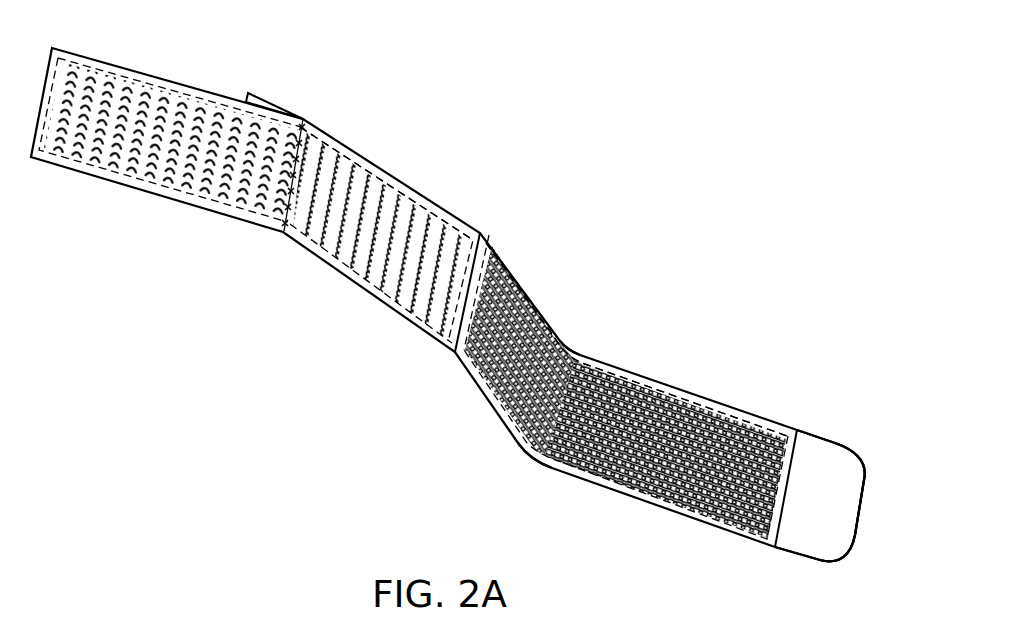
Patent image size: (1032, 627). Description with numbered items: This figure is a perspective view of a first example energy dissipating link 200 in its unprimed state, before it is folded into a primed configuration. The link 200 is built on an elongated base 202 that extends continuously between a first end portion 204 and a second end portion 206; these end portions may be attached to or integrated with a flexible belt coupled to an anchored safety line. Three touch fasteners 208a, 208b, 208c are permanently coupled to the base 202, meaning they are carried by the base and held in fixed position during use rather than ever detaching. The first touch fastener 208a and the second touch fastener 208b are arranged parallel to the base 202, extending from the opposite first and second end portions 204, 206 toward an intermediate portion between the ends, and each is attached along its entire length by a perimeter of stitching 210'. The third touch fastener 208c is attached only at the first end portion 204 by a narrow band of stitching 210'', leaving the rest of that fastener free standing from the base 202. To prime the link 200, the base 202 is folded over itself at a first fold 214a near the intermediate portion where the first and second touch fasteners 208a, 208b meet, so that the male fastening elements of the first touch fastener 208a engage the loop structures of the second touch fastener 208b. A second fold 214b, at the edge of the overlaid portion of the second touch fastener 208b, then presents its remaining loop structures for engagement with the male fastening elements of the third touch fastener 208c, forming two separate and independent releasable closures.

The energy dissipating link 200 is at (518, 172).
The elongated base 202 is at (828, 422).
The first end portion 204 is at (264, 98).
The second end portion 206 is at (850, 505).
The first touch fastener 208a is at (392, 165).
The second touch fastener 208b is at (718, 382).
The third touch fastener 208c is at (152, 68).
The perimeter of stitching 210' is at (545, 282).
The narrow band of stitching 210'' is at (326, 147).
The first fold 214a is at (481, 236).
The second fold 214b is at (581, 353).